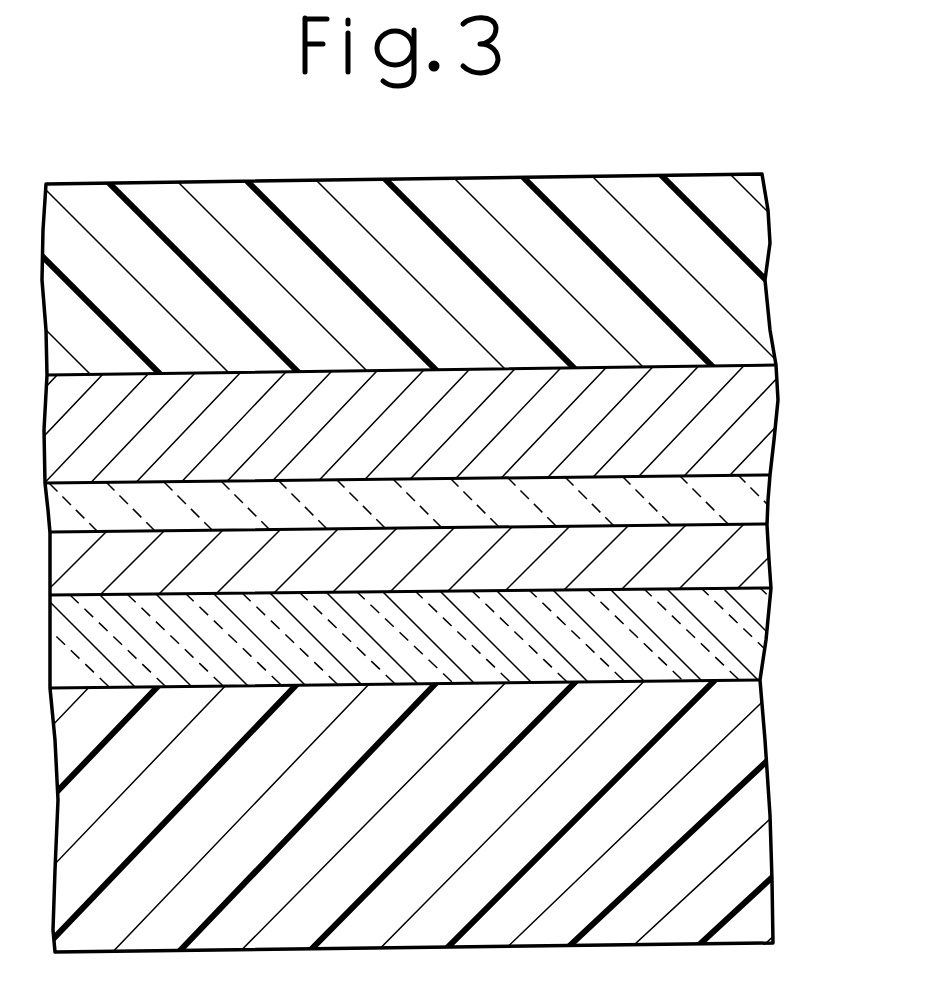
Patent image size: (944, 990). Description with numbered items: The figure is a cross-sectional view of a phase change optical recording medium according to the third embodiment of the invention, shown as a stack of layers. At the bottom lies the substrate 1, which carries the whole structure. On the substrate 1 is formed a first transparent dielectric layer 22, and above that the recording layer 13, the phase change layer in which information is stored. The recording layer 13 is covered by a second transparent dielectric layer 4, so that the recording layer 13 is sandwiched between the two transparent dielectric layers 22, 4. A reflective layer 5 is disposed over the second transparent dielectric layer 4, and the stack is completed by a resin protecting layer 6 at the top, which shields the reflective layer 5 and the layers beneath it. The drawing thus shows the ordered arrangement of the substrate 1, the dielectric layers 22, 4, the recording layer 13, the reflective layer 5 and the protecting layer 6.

The substrate 1 is at (742, 822).
The first transparent dielectric layer 22 is at (745, 638).
The recording layer 13 is at (757, 570).
The second transparent dielectric layer 4 is at (748, 502).
The reflective layer 5 is at (752, 427).
The resin protecting layer 6 is at (740, 292).